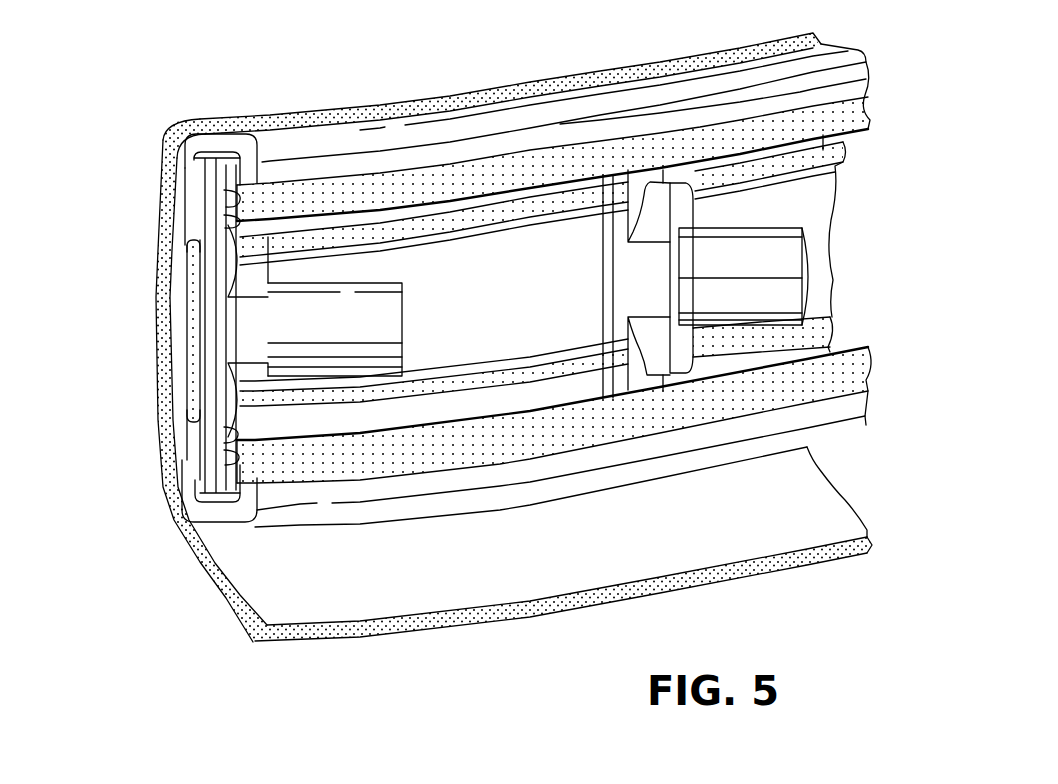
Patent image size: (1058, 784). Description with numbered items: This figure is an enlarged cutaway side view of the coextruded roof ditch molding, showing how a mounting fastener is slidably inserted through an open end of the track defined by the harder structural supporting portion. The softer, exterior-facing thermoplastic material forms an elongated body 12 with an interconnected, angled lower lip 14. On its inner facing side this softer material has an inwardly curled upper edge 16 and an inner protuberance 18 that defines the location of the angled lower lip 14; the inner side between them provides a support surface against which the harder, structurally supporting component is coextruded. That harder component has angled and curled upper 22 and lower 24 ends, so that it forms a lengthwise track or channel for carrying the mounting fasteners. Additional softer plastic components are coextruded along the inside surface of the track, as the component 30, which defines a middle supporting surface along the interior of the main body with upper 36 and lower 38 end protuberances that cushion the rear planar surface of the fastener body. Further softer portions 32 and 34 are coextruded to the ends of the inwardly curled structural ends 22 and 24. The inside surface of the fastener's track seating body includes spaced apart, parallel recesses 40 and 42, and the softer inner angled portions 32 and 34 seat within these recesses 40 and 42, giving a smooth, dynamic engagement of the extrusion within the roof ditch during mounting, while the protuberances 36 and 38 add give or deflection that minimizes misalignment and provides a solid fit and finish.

The elongated body 12 is at (153, 328).
The angled lower lip 14 is at (223, 607).
The inwardly curled upper edge 16 is at (187, 118).
The inner protuberance 18 is at (184, 530).
The angled upper end 22 is at (223, 143).
The angled lower end 24 is at (218, 523).
The softer inside surface component 30 is at (162, 325).
The upper softer inner angled portion 32 is at (238, 194).
The lower softer inner angled portion 34 is at (250, 453).
The upper end protuberance 36 is at (190, 243).
The lower end protuberance 38 is at (193, 417).
The upper recess 40 is at (224, 211).
The lower recess 42 is at (232, 438).